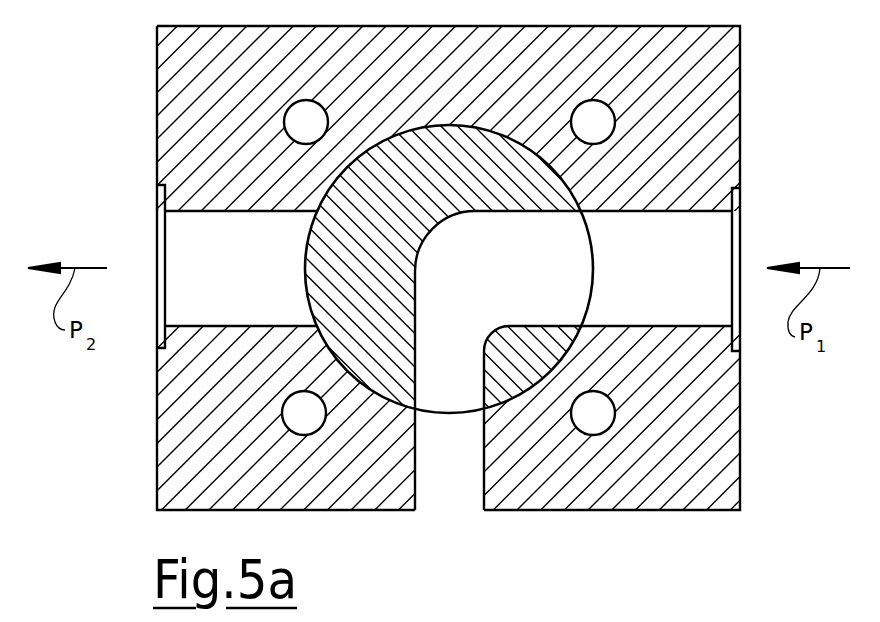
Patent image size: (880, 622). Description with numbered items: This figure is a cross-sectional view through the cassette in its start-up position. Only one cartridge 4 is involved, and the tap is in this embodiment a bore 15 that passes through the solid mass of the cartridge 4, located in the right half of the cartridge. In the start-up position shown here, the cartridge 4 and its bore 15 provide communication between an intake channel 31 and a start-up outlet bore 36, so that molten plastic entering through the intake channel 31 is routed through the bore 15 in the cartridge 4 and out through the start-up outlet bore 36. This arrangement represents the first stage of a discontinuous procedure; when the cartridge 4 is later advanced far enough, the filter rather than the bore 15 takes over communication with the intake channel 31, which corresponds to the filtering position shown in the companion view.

The cartridge 4 is at (347, 325).
The bore 15 is at (498, 310).
The intake channel 31 is at (448, 268).
The start-up outlet bore 36 is at (465, 485).